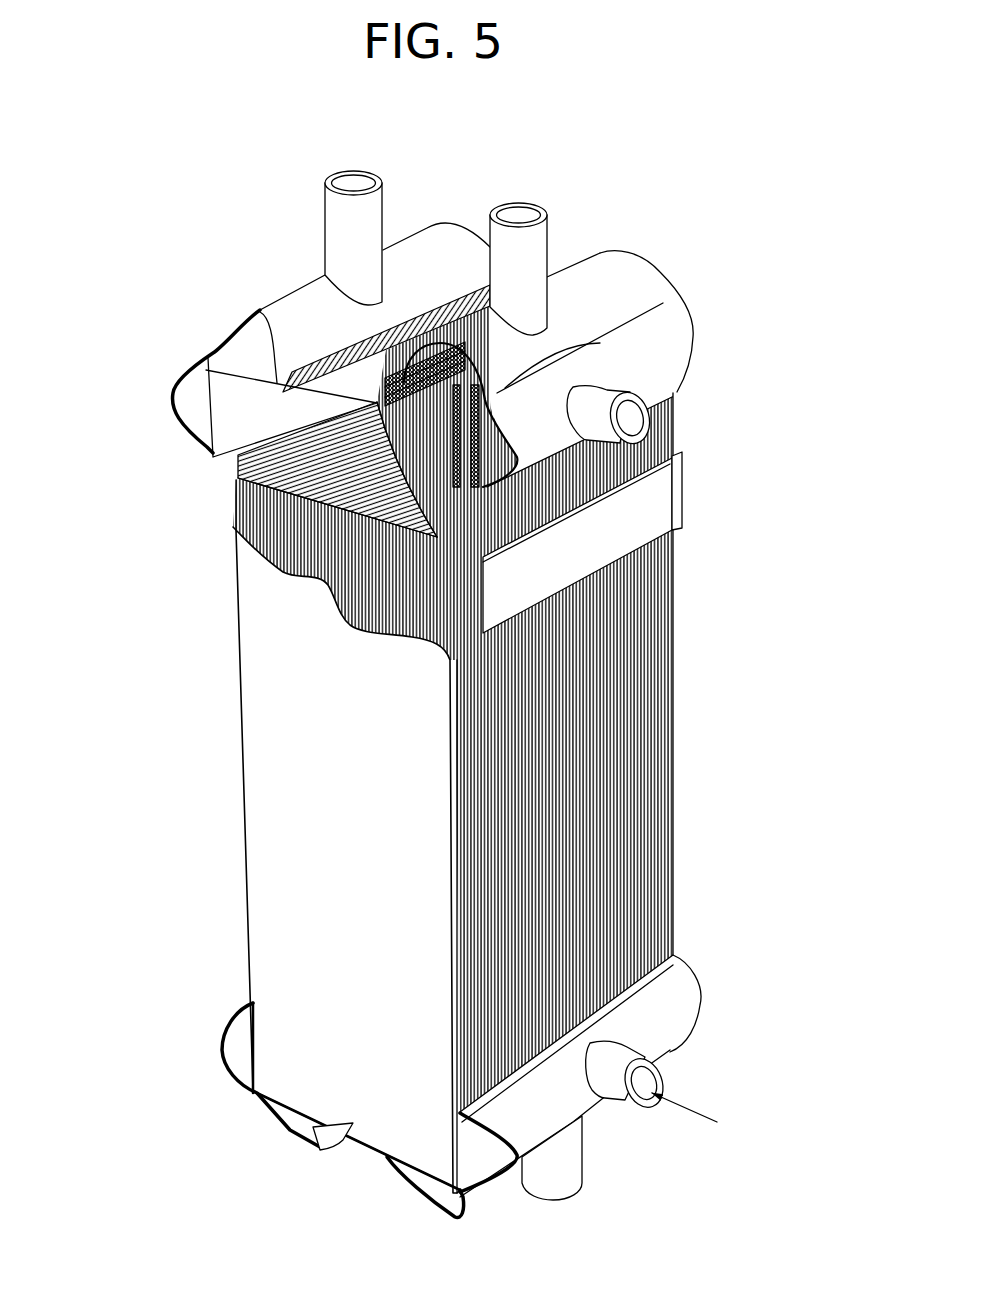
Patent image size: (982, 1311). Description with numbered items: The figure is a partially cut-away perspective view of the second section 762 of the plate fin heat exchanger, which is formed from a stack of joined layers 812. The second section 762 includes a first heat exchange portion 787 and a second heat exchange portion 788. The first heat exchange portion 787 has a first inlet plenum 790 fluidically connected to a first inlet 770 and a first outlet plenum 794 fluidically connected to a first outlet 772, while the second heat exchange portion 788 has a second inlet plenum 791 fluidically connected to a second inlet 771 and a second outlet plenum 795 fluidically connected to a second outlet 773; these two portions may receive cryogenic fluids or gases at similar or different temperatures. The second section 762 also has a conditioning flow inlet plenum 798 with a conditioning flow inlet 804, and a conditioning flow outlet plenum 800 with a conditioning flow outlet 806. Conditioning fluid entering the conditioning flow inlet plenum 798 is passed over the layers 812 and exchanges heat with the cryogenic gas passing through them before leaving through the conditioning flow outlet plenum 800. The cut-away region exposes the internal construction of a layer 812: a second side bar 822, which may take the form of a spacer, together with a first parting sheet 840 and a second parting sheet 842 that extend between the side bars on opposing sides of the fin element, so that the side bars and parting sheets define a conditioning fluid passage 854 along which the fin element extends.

The second section 762 is at (172, 251).
The first inlet 770 is at (542, 230).
The second inlet 771 is at (343, 1147).
The first outlet 772 is at (575, 1165).
The second outlet 773 is at (328, 200).
The first heat exchange portion 787 is at (683, 293).
The second heat exchange portion 788 is at (221, 334).
The first inlet plenum 790 is at (448, 329).
The second inlet plenum 791 is at (218, 1027).
The first outlet plenum 794 is at (480, 1203).
The second outlet plenum 795 is at (296, 282).
The conditioning flow inlet plenum 798 is at (449, 1106).
The conditioning flow outlet plenum 800 is at (690, 328).
The conditioning flow inlet 804 is at (613, 1093).
The conditioning flow outlet 806 is at (655, 394).
The layers 812 is at (417, 342).
The second side bar 822 is at (485, 392).
The first parting sheet 840 is at (576, 360).
The second parting sheet 842 is at (483, 412).
The conditioning fluid passage 854 is at (483, 440).